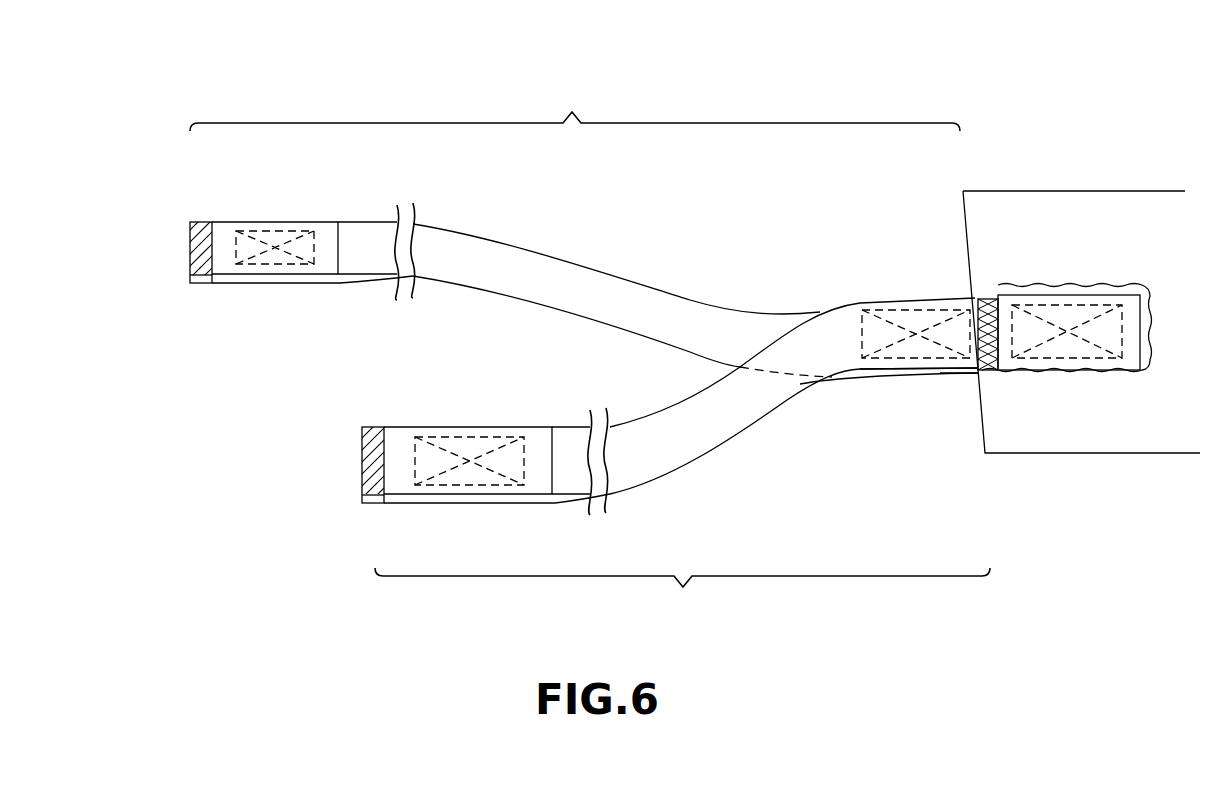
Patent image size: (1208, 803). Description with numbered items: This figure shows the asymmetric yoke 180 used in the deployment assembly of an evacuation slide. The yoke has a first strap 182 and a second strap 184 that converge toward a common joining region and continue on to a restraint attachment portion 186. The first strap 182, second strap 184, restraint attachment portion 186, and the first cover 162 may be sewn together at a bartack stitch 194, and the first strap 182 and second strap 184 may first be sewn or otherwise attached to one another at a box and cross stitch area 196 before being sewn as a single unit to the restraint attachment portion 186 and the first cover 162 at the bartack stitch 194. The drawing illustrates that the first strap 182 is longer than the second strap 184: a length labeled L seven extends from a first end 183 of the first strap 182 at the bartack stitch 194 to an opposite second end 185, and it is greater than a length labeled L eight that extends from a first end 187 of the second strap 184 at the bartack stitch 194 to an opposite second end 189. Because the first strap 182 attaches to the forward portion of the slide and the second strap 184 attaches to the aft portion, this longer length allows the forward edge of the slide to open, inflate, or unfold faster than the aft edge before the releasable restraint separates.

The asymmetric yoke 180 is at (186, 94).
The first cover 162 is at (1128, 208).
The first strap 182 is at (533, 260).
The second strap 184 is at (743, 418).
The second end of first strap 185 is at (190, 234).
The second end of second strap 189 is at (362, 458).
The first end of first strap 183 is at (964, 308).
The bartack stitch 194 is at (990, 293).
The box and cross stitch area 196 is at (900, 364).
The first end of second strap 187 is at (972, 376).
The restraint attachment portion 186 is at (1133, 345).